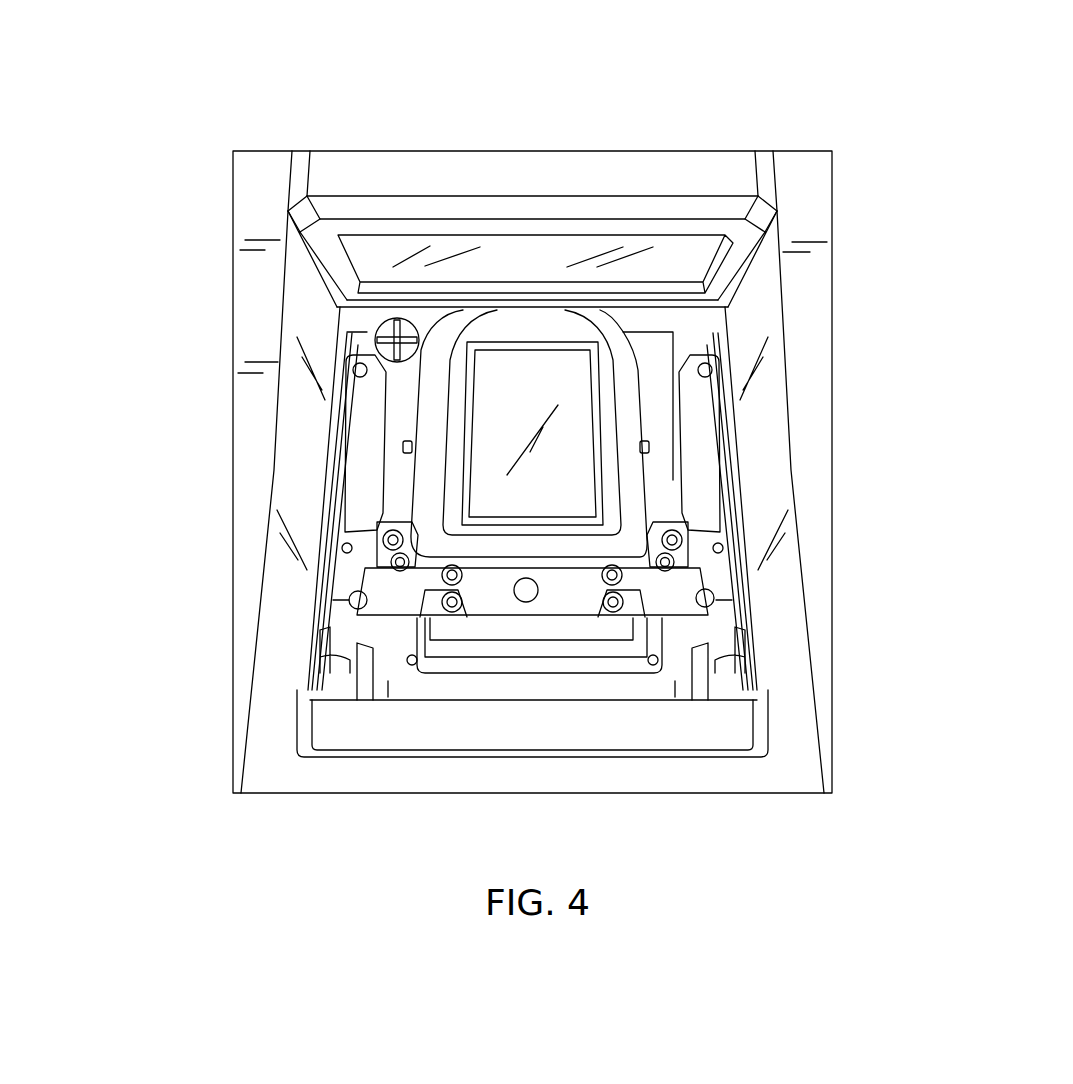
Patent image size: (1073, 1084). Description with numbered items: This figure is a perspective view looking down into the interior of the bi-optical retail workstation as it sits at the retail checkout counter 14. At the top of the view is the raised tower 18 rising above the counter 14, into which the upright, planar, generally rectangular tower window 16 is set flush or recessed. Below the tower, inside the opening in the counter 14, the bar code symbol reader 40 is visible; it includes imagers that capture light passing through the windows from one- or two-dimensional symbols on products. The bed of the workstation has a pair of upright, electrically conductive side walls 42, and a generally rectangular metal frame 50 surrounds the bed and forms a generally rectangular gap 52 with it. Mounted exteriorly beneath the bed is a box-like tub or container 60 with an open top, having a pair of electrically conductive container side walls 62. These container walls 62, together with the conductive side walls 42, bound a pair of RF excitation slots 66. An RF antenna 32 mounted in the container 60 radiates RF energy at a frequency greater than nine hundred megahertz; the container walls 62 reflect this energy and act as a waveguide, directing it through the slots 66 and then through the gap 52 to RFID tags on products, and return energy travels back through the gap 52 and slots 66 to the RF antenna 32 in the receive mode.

The retail checkout counter 14 is at (812, 318).
The tower window 16 is at (416, 245).
The raised tower 18 is at (537, 167).
The RF antenna 32 is at (447, 640).
The bar code symbol reader 40 is at (490, 497).
The upright side walls 42 is at (848, 467).
The frame 50 is at (780, 590).
The gap 52 is at (743, 513).
The container 60 is at (657, 683).
The container side walls 62 is at (737, 477).
The RF excitation slots 66 is at (725, 443).